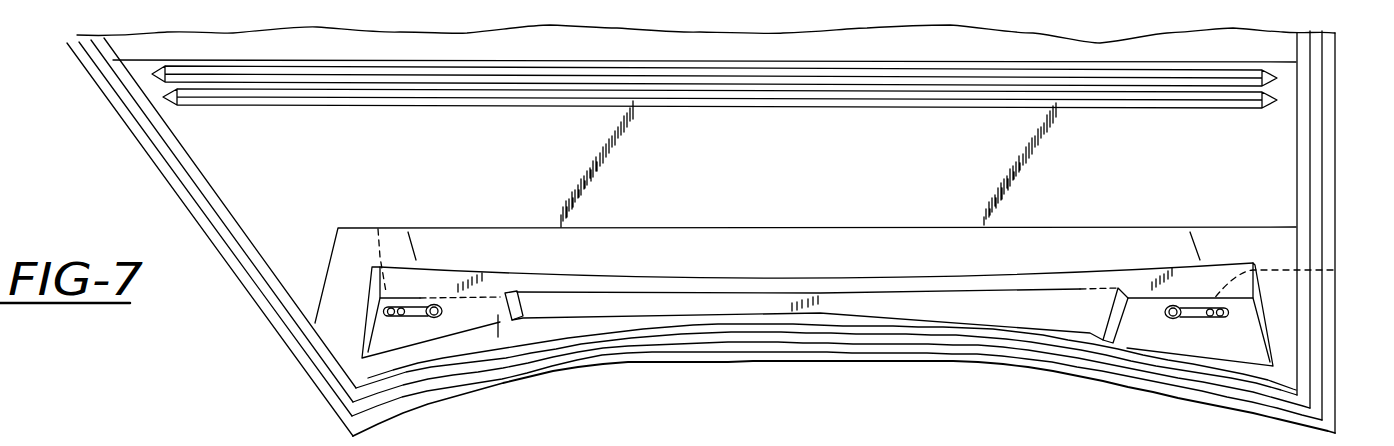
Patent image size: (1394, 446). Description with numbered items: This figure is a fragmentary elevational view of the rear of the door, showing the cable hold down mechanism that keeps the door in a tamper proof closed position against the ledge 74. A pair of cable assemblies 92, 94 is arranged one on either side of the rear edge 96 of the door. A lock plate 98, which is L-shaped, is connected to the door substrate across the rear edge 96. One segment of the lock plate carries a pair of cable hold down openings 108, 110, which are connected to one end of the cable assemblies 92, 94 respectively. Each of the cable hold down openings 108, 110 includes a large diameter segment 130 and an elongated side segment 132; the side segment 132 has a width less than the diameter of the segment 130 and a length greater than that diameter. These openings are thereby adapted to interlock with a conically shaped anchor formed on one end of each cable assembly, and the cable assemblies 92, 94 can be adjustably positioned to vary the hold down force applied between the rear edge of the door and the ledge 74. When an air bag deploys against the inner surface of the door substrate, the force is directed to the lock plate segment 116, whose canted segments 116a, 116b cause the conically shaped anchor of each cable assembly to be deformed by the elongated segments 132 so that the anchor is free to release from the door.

The ledge 74 is at (976, 295).
The cable assembly 92 is at (418, 302).
The cable assembly 94 is at (1200, 302).
The rear edge 96 is at (782, 364).
The lock plate 98 is at (645, 291).
The cable hold down opening 108 is at (437, 304).
The cable hold down opening 110 is at (1167, 306).
The lock plate segment 116 is at (789, 302).
The canted segment 116a is at (500, 318).
The canted segment 116b is at (1222, 347).
The large diameter segment 130 is at (446, 318).
The elongated side segment 132 is at (378, 228).